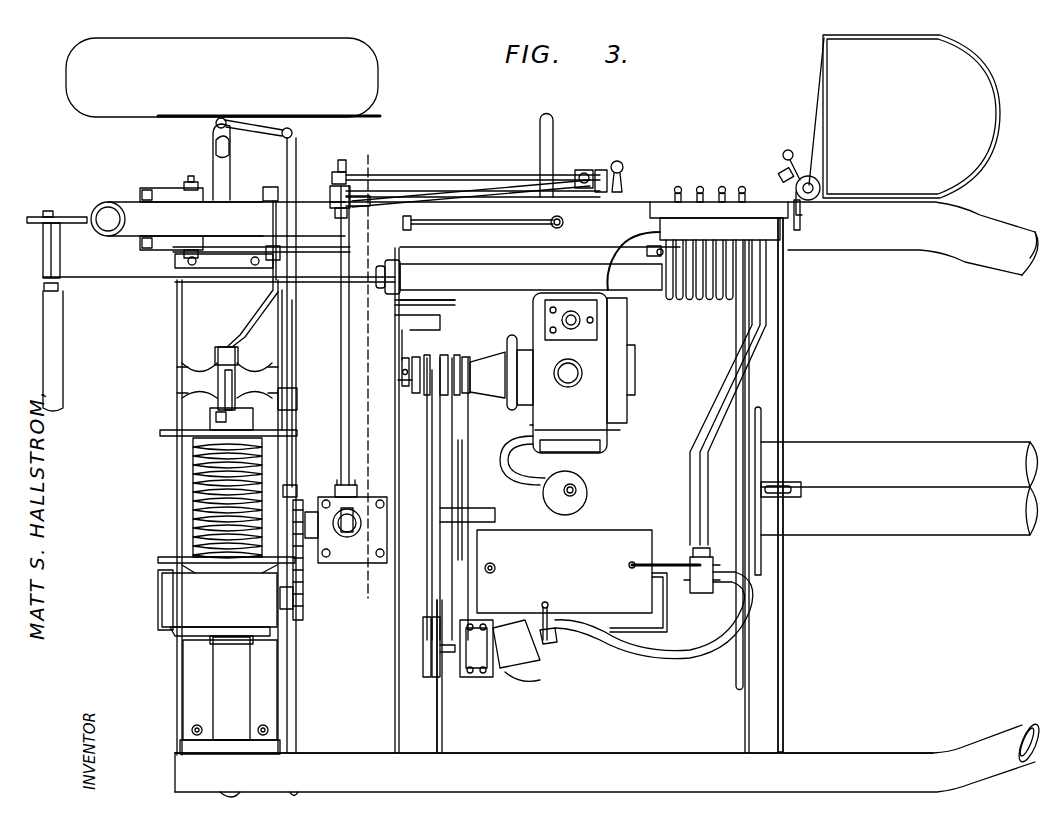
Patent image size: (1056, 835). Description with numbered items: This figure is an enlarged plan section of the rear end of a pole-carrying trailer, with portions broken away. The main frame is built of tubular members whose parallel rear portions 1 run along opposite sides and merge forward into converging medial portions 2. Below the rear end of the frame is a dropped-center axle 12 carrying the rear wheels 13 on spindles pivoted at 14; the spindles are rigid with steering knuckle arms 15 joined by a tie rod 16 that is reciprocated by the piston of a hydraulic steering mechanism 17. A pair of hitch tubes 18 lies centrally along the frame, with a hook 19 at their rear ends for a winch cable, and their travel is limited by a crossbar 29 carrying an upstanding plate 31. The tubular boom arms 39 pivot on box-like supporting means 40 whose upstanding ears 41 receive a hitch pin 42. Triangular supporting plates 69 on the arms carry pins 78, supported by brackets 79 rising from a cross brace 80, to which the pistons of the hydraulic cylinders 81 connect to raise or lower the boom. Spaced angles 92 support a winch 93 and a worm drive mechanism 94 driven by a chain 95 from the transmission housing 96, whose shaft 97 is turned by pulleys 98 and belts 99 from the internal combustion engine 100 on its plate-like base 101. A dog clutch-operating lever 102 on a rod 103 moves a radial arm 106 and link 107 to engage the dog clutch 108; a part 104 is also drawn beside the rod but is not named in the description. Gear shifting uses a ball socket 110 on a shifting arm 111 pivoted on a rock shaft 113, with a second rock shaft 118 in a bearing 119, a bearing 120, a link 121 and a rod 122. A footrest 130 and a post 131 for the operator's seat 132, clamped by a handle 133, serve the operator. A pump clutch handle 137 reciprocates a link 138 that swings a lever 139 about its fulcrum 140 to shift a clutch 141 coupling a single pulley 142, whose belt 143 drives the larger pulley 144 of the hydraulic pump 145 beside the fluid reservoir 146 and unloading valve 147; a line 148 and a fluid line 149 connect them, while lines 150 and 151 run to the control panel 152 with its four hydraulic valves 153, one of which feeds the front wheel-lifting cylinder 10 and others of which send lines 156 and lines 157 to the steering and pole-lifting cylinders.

The rear portions 1 is at (868, 250).
The medial portions 2 is at (1005, 262).
The front wheel-lifting cylinder 10 is at (368, 155).
The axle 12 is at (212, 160).
The rear wheels 13 is at (95, 120).
The spindle pivot 14 is at (216, 122).
The steering knuckle arms 15 is at (270, 132).
The tie rod 16 is at (289, 176).
The hydraulic steering mechanism 17 is at (301, 355).
The hitch tubes 18 is at (893, 440).
The hook 19 is at (795, 480).
The crossbar 29 is at (783, 385).
The upstanding plate 31 is at (762, 425).
The boom arms 39 is at (128, 205).
The supporting means 40 is at (215, 240).
The upstanding ears 41 is at (155, 187).
The hitch pin 42 is at (190, 180).
The triangular supporting plates 69 is at (70, 215).
The pins 78 is at (43, 250).
The brackets 79 is at (44, 290).
The cross brace 80 is at (63, 340).
The hydraulic cylinders 81 is at (498, 285).
The angles 92 is at (258, 675).
The winch 93 is at (165, 436).
The worm drive mechanism 94 is at (195, 610).
The chain 95 is at (303, 590).
The transmission housing 96 is at (370, 560).
The shaft 97 is at (483, 505).
The pulleys 98 is at (460, 465).
The belts 99 is at (445, 420).
The internal combustion engine 100 is at (598, 350).
The plate-like base 101 is at (430, 708).
The dog clutch-operating lever 102 is at (622, 165).
The rod 103 is at (405, 190).
The block 104 is at (590, 200).
The radial arm 106 is at (265, 184).
The link 107 is at (265, 225).
The dog clutch 108 is at (205, 360).
The ball socket 110 is at (345, 538).
The shifting arm 111 is at (337, 490).
The rock shaft 113 is at (340, 320).
The rock shaft 118 is at (480, 172).
The bearing 119 is at (333, 170).
The bearing 120 is at (332, 200).
The link 121 is at (338, 215).
The rod 122 is at (372, 206).
The footrest 130 is at (553, 138).
The post 131 is at (800, 180).
The operator's seat 132 is at (835, 78).
The handle 133 is at (780, 172).
The pump clutch handle 137 is at (563, 225).
The link 138 is at (480, 225).
The lever 139 is at (432, 318).
The fulcrum 140 is at (400, 335).
The clutch 141 is at (400, 385).
The single pulley 142 is at (418, 395).
The belt 143 is at (422, 470).
The larger pulley 144 is at (422, 660).
The hydraulic pump 145 is at (500, 678).
The fluid reservoir 146 is at (600, 535).
The unloading valve 147 is at (702, 598).
The line 148 is at (668, 660).
The fluid line 149 is at (632, 600).
The line 150 is at (785, 318).
The line 151 is at (766, 300).
The control panel 152 is at (656, 200).
The hydraulic valves 153 is at (708, 172).
The lines 156 is at (667, 300).
The lines 157 is at (712, 300).